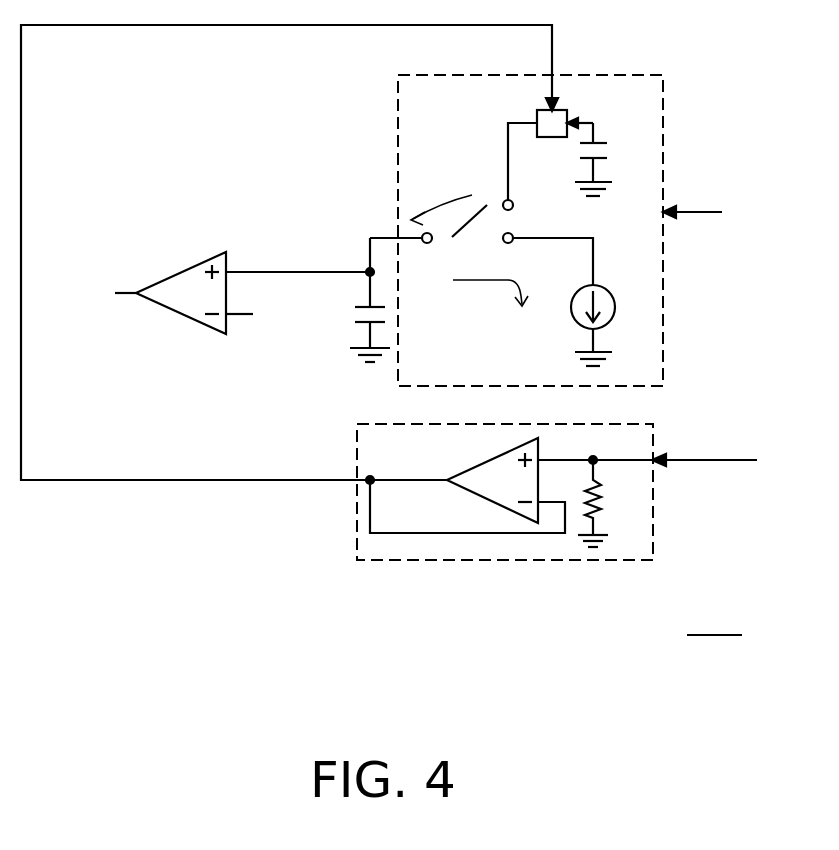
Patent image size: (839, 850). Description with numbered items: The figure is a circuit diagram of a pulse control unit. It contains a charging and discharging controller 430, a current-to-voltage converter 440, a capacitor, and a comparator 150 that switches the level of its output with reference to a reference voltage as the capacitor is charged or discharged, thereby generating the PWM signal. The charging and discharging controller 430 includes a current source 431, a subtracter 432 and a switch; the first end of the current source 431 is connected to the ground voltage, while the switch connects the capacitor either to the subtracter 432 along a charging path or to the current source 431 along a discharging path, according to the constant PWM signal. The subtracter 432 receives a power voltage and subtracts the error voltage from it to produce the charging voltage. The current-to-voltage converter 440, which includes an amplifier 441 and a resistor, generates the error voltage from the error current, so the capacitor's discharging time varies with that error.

The comparator 150 is at (179, 273).
The charging and discharging controller 430 is at (398, 168).
The current source 431 is at (616, 307).
The subtracter 432 is at (568, 110).
The current-to-voltage converter 440 is at (356, 512).
The amplifier 441 is at (494, 502).